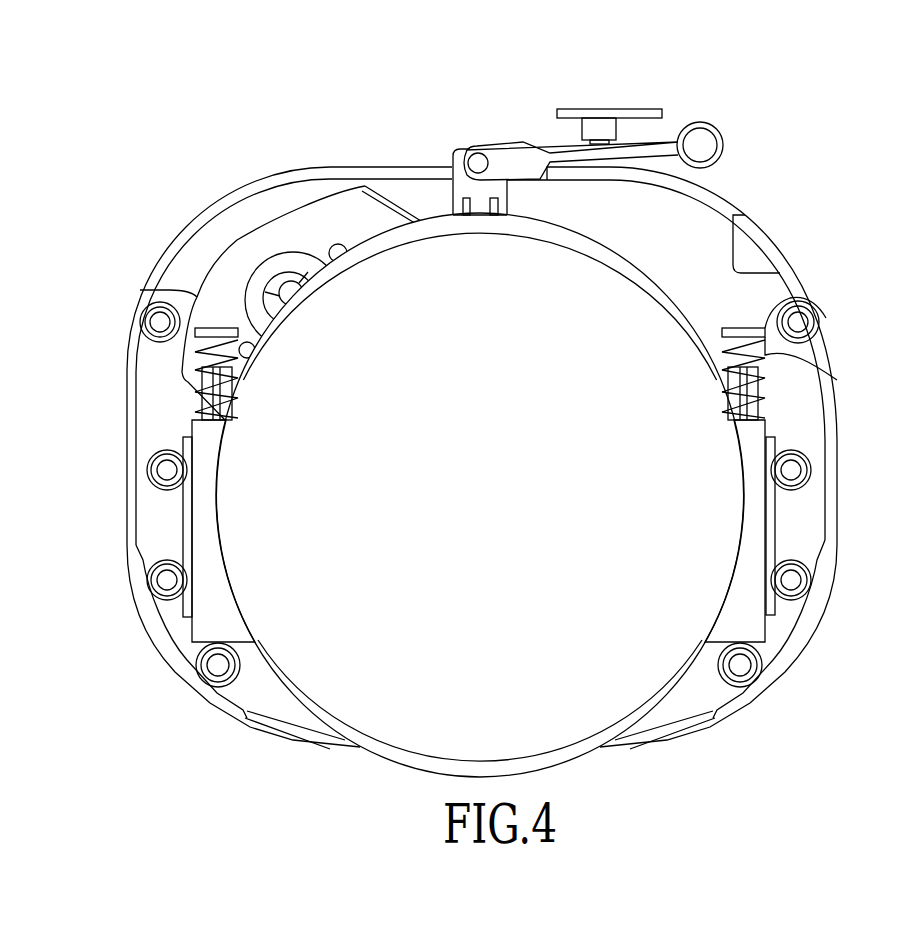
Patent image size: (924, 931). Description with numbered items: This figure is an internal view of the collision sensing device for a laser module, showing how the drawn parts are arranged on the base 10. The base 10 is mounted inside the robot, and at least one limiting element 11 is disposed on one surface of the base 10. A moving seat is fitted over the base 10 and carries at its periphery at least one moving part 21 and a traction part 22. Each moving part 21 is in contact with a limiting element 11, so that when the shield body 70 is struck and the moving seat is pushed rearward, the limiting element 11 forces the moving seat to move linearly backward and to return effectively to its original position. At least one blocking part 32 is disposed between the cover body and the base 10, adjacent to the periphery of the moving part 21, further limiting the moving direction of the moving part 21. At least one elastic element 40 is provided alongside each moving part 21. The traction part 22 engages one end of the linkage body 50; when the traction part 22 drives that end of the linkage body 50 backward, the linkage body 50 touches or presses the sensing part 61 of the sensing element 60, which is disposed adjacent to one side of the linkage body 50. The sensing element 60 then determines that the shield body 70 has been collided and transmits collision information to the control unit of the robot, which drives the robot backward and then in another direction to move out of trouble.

The base 10 is at (482, 458).
The limiting element 11 is at (190, 528).
The moving part 21 is at (207, 435).
The traction part 22 is at (454, 150).
The blocking part 32 is at (219, 327).
The elastic element 40 is at (186, 380).
The linkage body 50 is at (523, 142).
The sensing element 60 is at (645, 110).
The sensing part 61 is at (605, 143).
The shield body 70 is at (660, 633).